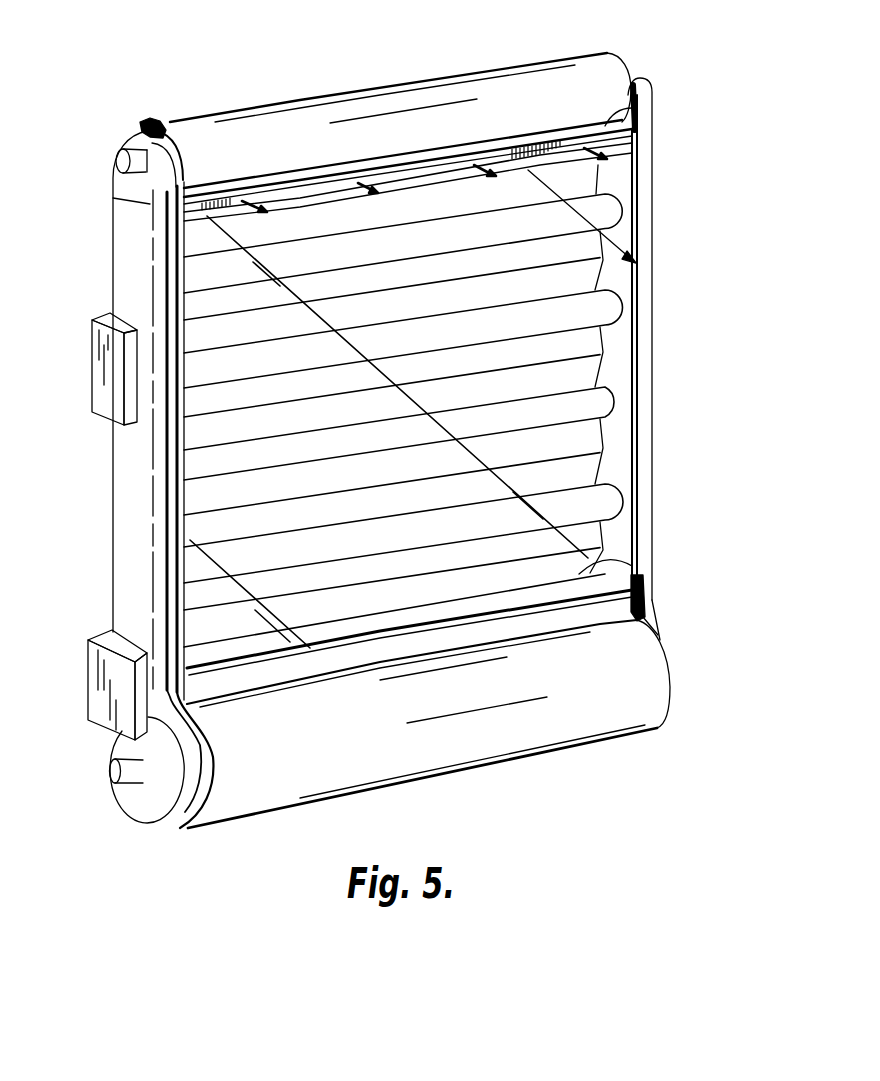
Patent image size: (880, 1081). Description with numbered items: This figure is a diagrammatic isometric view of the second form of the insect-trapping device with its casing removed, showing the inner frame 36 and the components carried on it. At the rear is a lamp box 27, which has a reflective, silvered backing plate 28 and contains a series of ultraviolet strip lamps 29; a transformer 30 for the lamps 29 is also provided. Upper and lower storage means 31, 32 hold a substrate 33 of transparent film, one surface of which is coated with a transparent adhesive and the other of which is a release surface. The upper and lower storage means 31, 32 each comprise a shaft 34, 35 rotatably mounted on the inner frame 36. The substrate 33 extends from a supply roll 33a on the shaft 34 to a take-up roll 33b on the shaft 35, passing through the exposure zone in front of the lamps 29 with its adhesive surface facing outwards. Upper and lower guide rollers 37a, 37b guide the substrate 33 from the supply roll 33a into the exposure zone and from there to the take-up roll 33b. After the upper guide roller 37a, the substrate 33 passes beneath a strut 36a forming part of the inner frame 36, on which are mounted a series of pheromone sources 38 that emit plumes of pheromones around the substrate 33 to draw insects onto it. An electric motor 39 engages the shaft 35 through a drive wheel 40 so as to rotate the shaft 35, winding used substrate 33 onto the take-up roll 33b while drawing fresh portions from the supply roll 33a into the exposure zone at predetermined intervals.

The lamp box 27 is at (627, 184).
The backing plate 28 is at (636, 262).
The ultraviolet strip lamps 29 is at (603, 308).
The transformer 30 is at (107, 373).
The upper storage means 31 is at (146, 116).
The lower storage means 32 is at (123, 798).
The substrate 33 is at (623, 456).
The supply roll 33a is at (611, 60).
The take-up roll 33b is at (660, 640).
The shaft 34 is at (117, 158).
The shaft 35 is at (111, 777).
The inner frame 36 is at (130, 550).
The strut 36a is at (640, 139).
The upper guide roller 37a is at (648, 98).
The lower guide roller 37b is at (595, 570).
The pheromone sources 38 is at (370, 182).
The electric motor 39 is at (107, 683).
The drive wheel 40 is at (123, 748).